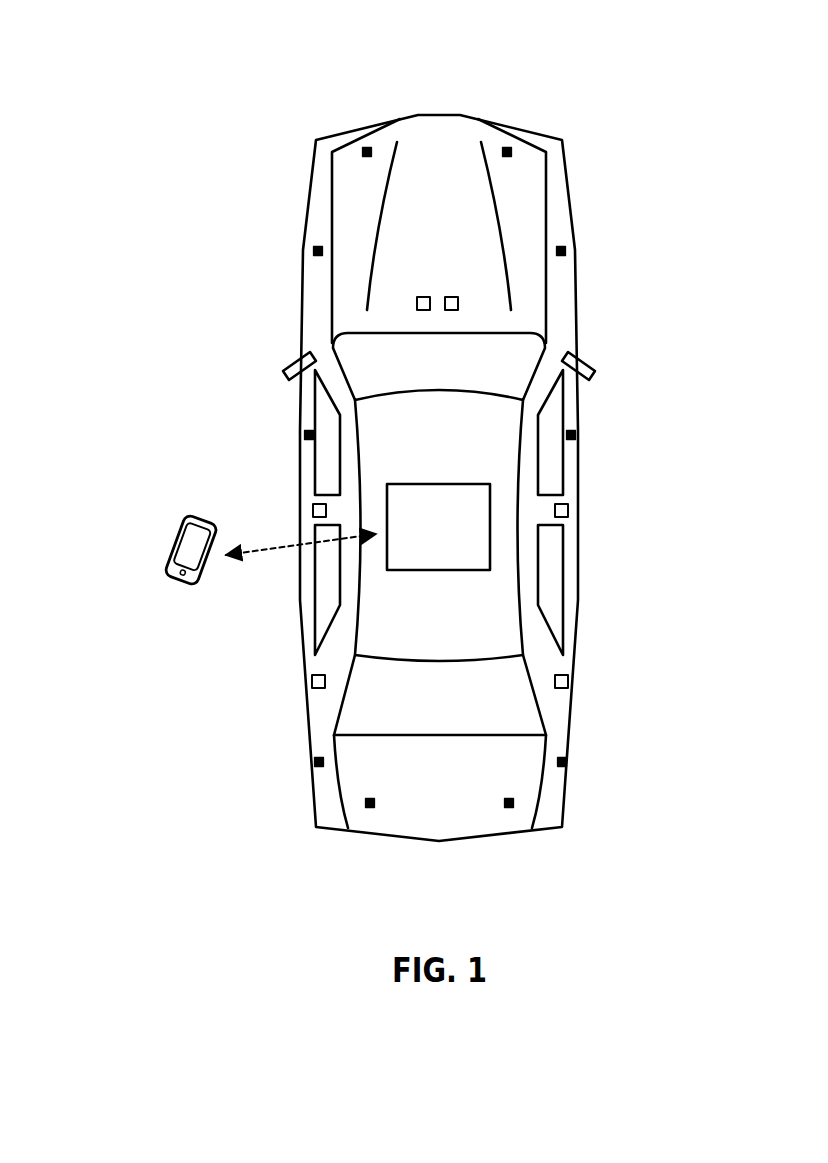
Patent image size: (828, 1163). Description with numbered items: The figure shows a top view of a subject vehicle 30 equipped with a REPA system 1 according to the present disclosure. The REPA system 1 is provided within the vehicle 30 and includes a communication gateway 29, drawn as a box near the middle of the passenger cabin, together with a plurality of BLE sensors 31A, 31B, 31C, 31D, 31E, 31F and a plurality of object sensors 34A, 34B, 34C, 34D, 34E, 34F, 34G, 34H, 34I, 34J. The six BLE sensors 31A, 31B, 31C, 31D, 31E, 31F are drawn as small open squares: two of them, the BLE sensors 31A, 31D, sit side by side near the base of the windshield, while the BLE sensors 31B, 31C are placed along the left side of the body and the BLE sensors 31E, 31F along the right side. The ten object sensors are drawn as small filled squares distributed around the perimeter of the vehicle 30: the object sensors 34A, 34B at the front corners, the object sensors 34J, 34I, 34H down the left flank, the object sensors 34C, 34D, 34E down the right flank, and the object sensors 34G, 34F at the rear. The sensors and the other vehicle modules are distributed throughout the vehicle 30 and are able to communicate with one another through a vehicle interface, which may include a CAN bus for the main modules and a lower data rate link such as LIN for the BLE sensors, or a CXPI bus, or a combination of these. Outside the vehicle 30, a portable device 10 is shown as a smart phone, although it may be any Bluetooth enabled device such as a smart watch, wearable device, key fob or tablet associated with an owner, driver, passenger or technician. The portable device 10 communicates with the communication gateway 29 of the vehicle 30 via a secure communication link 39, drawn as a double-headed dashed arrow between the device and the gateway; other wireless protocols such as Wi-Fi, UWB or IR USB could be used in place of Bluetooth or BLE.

The REPA system 1 is at (150, 46).
The portable device 10 is at (170, 548).
The communication gateway 29 is at (457, 571).
The vehicle 30 is at (441, 115).
The BLE sensor 31A is at (423, 297).
The BLE sensor 31B is at (313, 510).
The BLE sensor 31C is at (312, 681).
The BLE sensor 31D is at (453, 297).
The BLE sensor 31E is at (568, 510).
The BLE sensor 31F is at (568, 681).
The object sensor 34A is at (367, 147).
The object sensor 34B is at (507, 147).
The object sensor 34C is at (566, 251).
The object sensor 34D is at (575, 435).
The object sensor 34E is at (568, 763).
The object sensor 34F is at (509, 808).
The object sensor 34G is at (370, 808).
The object sensor 34H is at (314, 762).
The object sensor 34I is at (306, 440).
The object sensor 34J is at (313, 253).
The secure communication link 39 is at (262, 548).